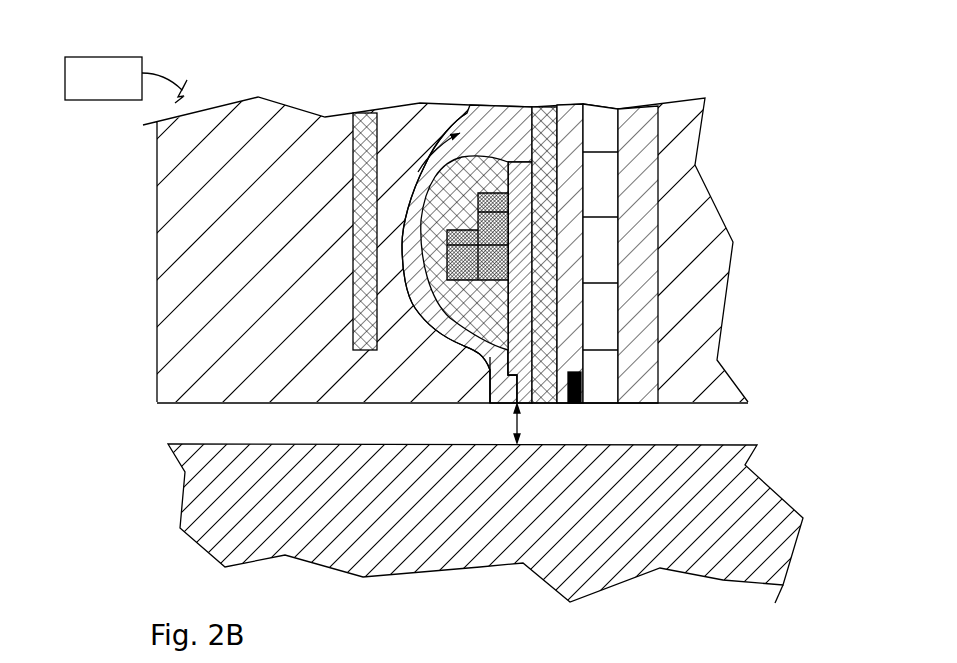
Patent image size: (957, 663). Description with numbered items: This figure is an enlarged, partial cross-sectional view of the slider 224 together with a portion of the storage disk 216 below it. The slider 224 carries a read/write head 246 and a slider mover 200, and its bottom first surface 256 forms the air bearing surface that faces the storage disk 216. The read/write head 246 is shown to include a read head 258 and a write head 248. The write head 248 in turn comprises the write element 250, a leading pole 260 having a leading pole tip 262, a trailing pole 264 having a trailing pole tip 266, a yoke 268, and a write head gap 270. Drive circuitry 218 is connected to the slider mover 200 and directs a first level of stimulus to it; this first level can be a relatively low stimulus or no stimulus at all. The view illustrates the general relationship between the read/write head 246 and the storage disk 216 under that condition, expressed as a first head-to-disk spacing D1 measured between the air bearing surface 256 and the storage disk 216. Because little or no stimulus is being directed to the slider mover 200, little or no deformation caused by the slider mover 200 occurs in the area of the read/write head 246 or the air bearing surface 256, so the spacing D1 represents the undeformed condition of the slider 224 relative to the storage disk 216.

The slider mover 200 is at (356, 115).
The storage disk 216 is at (752, 500).
The drive circuitry 218 is at (88, 67).
The slider 224 is at (642, 50).
The read/write head 246 is at (479, 358).
The write head 248 is at (416, 265).
The write element 250 is at (510, 230).
The first surface 256 is at (192, 406).
The read head 258 is at (582, 372).
The leading pole 260 is at (548, 404).
The leading pole tip 262 is at (530, 408).
The trailing pole 264 is at (502, 384).
The trailing pole tip 266 is at (540, 396).
The yoke 268 is at (502, 137).
The write head gap 270 is at (528, 372).
The first head-to-disk spacing D1 is at (518, 428).